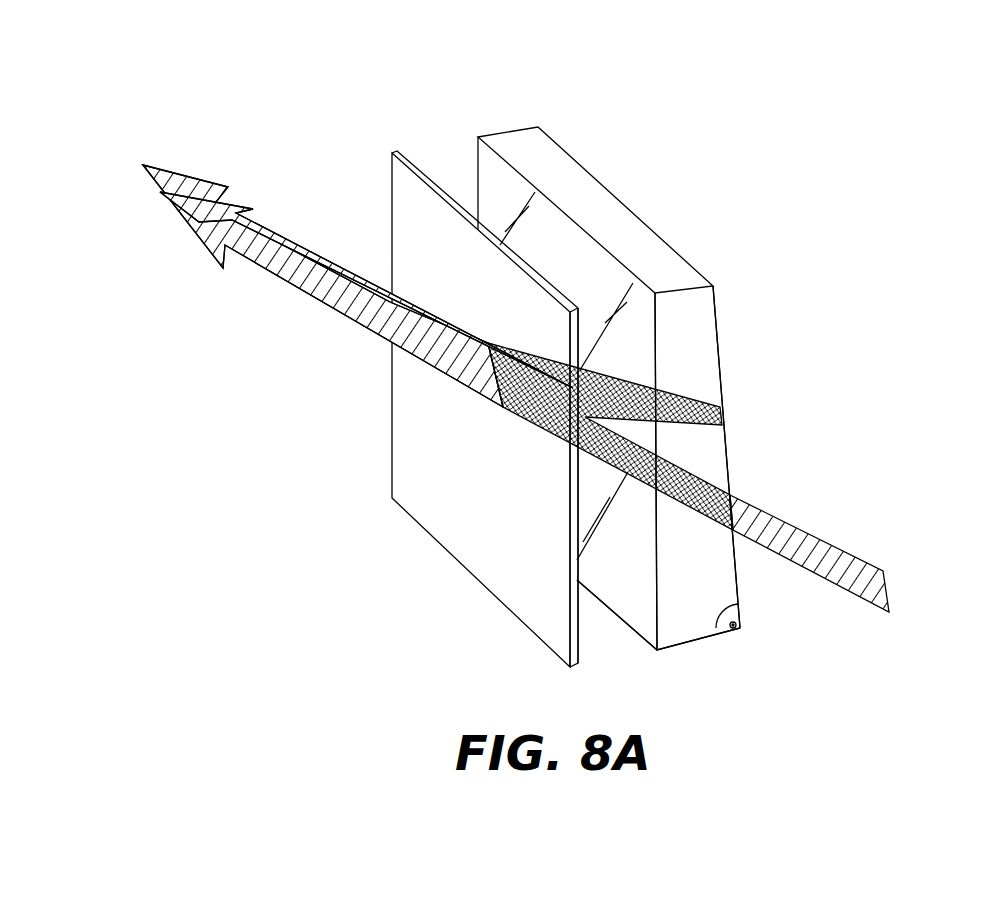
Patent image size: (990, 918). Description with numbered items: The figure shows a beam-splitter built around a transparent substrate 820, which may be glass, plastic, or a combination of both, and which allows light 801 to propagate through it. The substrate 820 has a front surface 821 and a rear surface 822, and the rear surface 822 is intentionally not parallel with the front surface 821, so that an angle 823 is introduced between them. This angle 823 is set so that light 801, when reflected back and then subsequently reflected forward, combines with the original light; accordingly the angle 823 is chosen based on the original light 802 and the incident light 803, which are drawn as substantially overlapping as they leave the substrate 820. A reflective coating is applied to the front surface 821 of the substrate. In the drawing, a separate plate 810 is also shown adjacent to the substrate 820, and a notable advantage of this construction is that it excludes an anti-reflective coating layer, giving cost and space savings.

The light 801 is at (890, 590).
The original light 802 is at (277, 273).
The incident light 803 is at (272, 228).
The optical plate 810 is at (407, 207).
The transparent substrate 820 is at (598, 208).
The front surface 821 is at (632, 617).
The rear surface 822 is at (718, 458).
The angle 823 is at (737, 633).